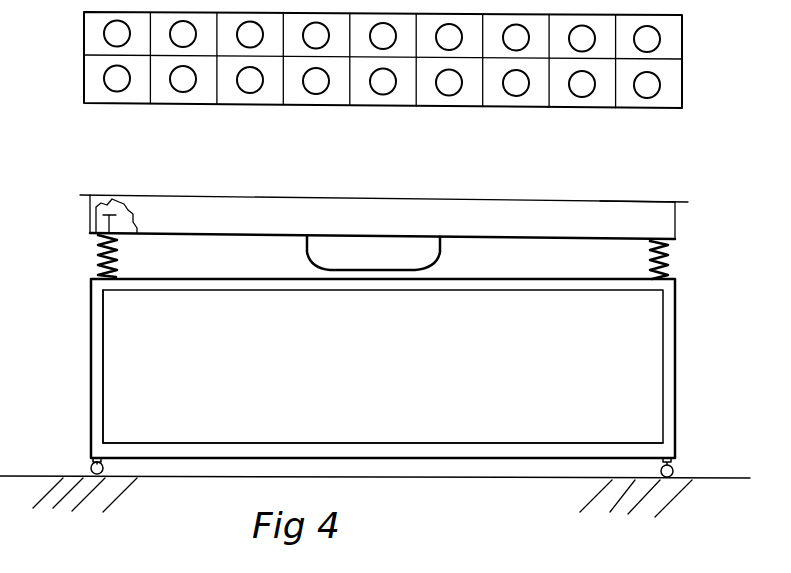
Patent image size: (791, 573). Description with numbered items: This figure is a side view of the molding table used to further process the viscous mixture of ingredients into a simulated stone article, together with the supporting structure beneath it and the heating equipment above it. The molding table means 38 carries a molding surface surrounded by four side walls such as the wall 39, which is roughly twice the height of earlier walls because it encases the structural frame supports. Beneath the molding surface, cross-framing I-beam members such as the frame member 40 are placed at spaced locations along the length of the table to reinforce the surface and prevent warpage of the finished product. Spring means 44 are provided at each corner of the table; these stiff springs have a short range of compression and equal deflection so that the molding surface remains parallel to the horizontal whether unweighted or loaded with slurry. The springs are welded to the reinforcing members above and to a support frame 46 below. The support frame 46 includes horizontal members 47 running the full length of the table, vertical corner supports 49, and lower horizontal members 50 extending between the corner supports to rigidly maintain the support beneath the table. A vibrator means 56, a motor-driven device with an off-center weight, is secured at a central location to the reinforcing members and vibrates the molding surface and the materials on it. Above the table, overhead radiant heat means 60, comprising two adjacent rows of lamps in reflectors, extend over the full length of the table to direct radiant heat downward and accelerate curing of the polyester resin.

The molding table means 38 is at (388, 198).
The side wall 39 is at (640, 182).
The frame member 40 is at (90, 229).
The spring means 44 is at (670, 266).
The support frame 46 is at (105, 427).
The horizontal members 47 is at (613, 290).
The vertical corner supports 49 is at (676, 393).
The lower horizontal members 50 is at (478, 443).
The vibrator means 56 is at (440, 258).
The overhead radiant heat means 60 is at (330, 106).